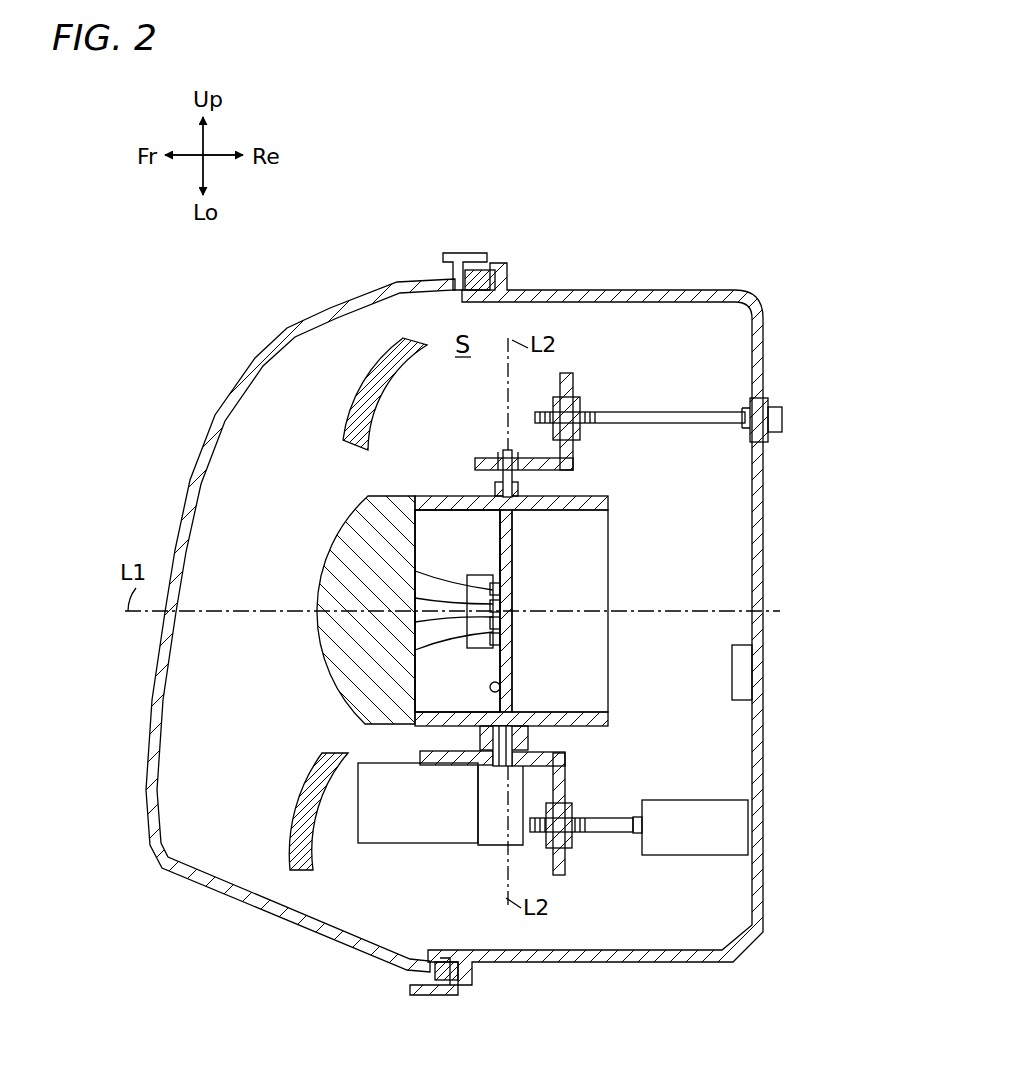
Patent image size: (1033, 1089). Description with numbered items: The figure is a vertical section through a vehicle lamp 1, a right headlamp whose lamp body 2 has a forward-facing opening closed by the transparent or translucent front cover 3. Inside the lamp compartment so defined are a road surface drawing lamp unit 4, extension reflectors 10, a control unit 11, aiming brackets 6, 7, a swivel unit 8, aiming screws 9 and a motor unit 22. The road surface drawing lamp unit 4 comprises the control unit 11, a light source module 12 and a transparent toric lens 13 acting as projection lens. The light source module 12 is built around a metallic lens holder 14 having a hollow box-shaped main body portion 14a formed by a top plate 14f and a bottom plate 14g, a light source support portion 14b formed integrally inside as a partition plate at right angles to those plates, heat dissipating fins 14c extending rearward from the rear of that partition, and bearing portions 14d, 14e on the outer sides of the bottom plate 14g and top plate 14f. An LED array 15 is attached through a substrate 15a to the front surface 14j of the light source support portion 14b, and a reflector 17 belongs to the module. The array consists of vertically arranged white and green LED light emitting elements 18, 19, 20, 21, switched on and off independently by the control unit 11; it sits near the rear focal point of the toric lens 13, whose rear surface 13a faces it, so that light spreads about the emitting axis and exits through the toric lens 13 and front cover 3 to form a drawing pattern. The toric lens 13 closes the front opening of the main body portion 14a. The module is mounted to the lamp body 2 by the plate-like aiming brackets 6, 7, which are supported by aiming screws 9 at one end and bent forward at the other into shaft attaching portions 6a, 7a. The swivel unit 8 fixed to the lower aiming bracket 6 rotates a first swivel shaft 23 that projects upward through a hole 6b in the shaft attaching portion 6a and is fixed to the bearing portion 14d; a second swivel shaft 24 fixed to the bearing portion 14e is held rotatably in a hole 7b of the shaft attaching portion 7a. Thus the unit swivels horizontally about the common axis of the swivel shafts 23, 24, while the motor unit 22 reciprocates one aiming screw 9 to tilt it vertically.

The vehicle lamp 1 is at (359, 172).
The lamp body 2 is at (703, 291).
The front cover 3 is at (337, 310).
The road surface drawing lamp unit 4 is at (345, 505).
The aiming bracket 6 is at (570, 866).
The shaft attaching portion 6a is at (432, 765).
The hole 6b is at (560, 770).
The aiming bracket 7 is at (576, 456).
The shaft attaching portion 7a is at (540, 458).
The hole 7b is at (512, 455).
The swivel unit 8 is at (432, 843).
The aiming screw 9 is at (657, 412).
The extension reflector 10 is at (381, 388).
The control unit 11 is at (745, 674).
The light source module 12 is at (462, 494).
The toric lens 13 is at (411, 494).
The rear surface 13a is at (416, 658).
The lens holder 14 is at (612, 720).
The main body portion 14a is at (612, 504).
The light source support portion 14b is at (512, 540).
The heat dissipating fins 14c is at (609, 650).
The bearing portion 14d is at (500, 780).
The bearing portion 14e is at (520, 490).
The top plate 14f is at (455, 512).
The bottom plate 14g is at (428, 719).
The front surface 14j is at (511, 688).
The LED array 15 is at (487, 650).
The substrate 15a is at (500, 598).
The reflector 17 is at (512, 558).
The LED light emitting element 18 is at (415, 571).
The LED light emitting element 19 is at (415, 598).
The LED light emitting element 20 is at (415, 622).
The LED light emitting element 21 is at (415, 650).
The motor unit 22 is at (702, 808).
The first swivel shaft 23 is at (507, 744).
The second swivel shaft 24 is at (506, 452).